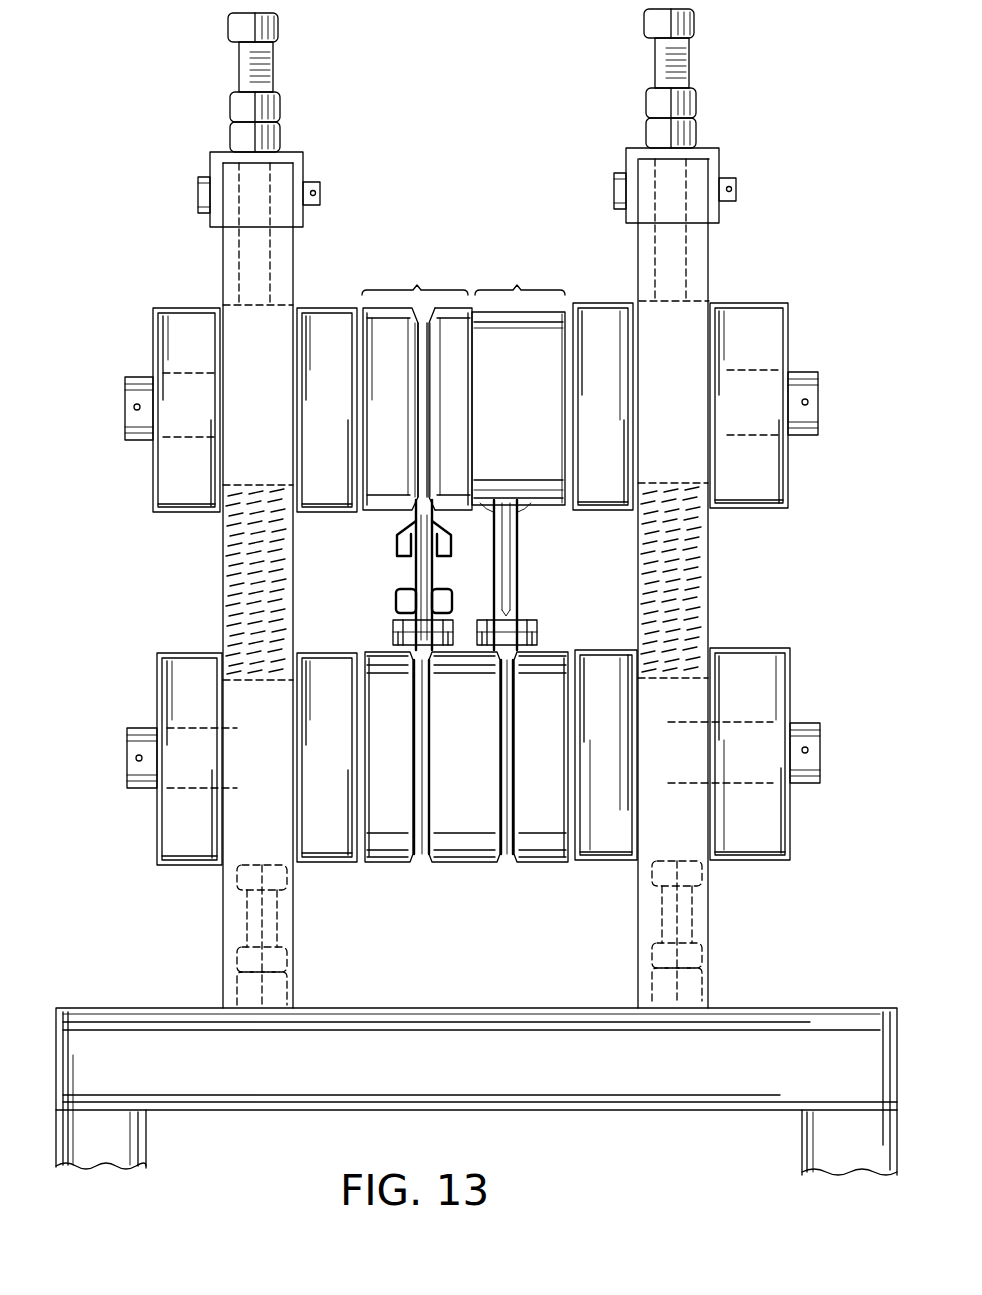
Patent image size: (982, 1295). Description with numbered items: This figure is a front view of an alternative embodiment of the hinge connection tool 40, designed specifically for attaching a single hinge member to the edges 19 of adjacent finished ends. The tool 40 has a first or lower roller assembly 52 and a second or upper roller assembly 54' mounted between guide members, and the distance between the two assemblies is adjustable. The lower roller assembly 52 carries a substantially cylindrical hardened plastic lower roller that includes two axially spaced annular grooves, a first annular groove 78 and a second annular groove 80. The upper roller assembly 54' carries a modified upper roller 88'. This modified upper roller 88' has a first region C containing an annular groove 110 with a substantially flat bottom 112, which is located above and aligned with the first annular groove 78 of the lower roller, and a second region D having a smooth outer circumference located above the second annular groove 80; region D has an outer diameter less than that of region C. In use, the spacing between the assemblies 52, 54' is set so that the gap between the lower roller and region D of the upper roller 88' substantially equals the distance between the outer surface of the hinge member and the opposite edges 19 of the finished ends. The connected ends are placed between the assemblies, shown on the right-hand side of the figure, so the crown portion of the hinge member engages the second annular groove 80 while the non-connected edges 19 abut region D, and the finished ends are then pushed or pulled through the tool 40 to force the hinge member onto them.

The hinge connection tool 40 is at (790, 146).
The upper roller assembly 54' is at (441, 407).
The lower roller assembly 52 is at (142, 836).
The modified upper roller 88' is at (365, 409).
The flat bottom 112 is at (422, 447).
The annular groove 110 is at (410, 482).
The edges 19 is at (487, 508).
The first annular groove 78 is at (422, 858).
The second annular groove 80 is at (507, 858).